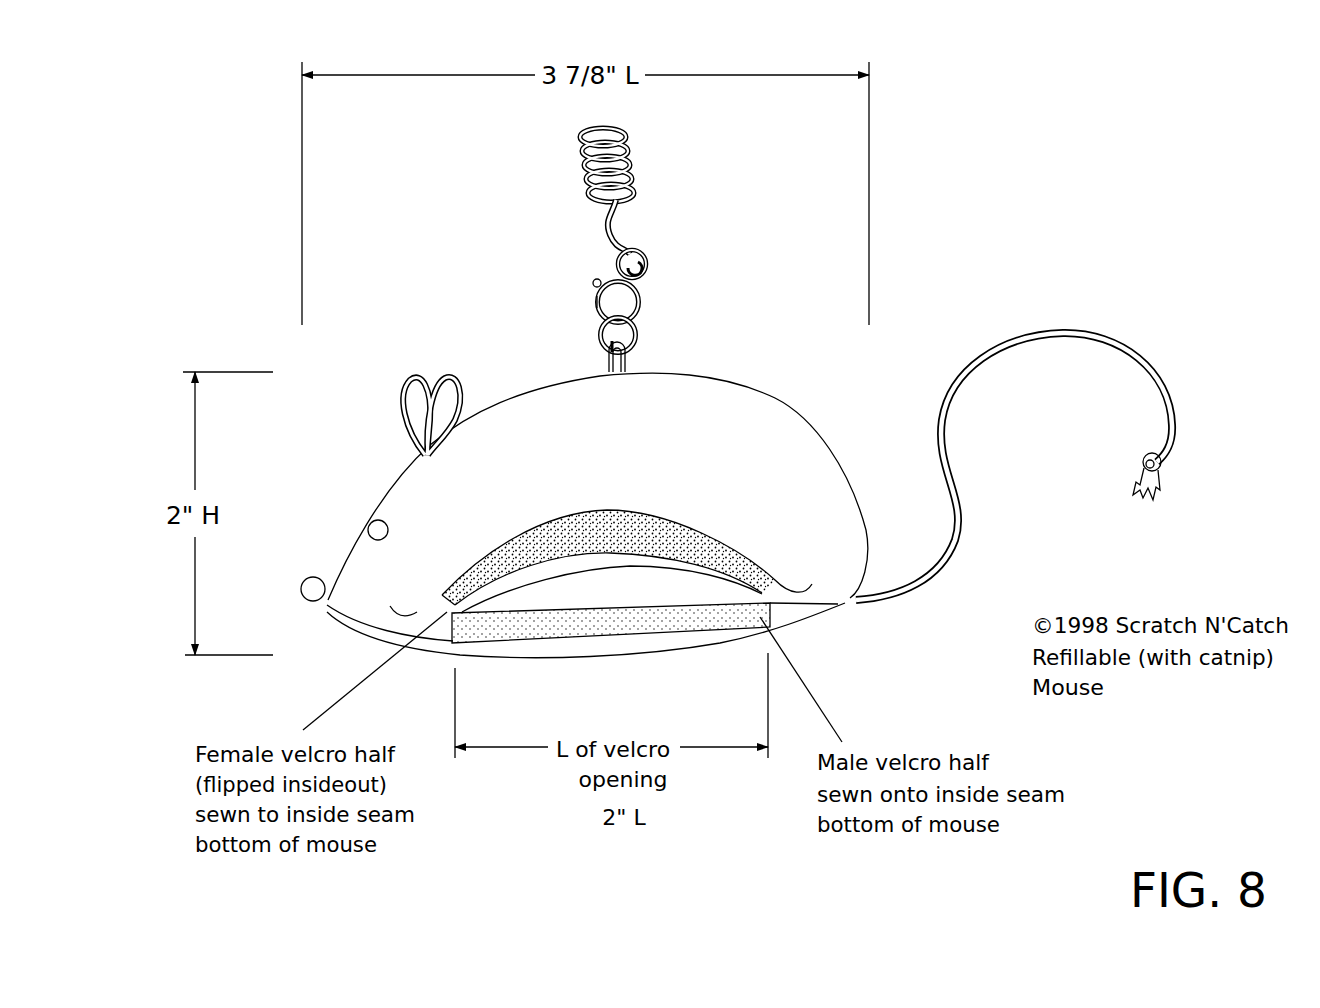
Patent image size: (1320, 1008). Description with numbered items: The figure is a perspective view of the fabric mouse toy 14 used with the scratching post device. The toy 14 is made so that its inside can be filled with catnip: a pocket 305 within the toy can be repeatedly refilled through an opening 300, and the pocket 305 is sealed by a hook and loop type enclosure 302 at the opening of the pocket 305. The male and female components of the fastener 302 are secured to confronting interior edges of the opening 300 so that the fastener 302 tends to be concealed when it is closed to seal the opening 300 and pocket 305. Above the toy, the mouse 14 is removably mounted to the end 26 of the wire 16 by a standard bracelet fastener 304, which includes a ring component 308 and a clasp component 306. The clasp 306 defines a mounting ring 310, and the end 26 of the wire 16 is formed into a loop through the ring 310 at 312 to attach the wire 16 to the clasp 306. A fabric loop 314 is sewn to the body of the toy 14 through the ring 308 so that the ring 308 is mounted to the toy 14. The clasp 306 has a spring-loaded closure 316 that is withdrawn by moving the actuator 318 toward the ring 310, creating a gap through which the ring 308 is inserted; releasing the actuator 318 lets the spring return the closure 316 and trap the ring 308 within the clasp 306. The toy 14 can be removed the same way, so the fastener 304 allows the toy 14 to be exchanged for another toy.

The fabric mouse toy 14 is at (742, 380).
The wire 16 is at (633, 150).
The end of wire 26 is at (622, 228).
The opening 300 is at (417, 612).
The hook and loop type enclosure 302 is at (706, 612).
The bracelet fastener 304 is at (648, 318).
The pocket 305 is at (645, 562).
The clasp component 306 is at (600, 292).
The ring component 308 is at (600, 340).
The mounting ring 310 is at (642, 290).
The loop of wire end 312 is at (648, 256).
The fabric loop 314 is at (630, 362).
The spring-loaded closure 316 is at (597, 310).
The actuator 318 is at (594, 280).